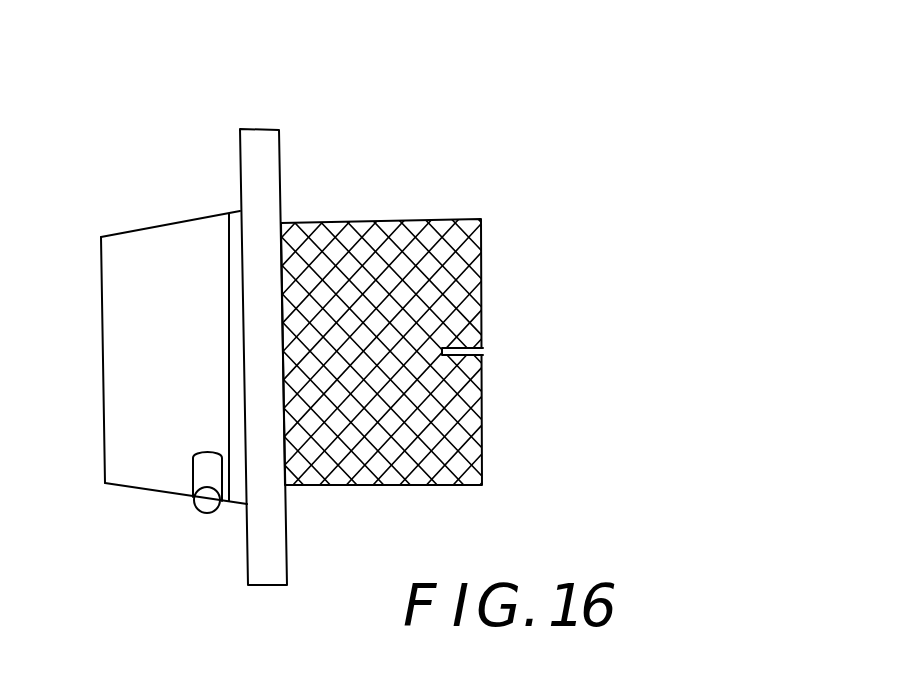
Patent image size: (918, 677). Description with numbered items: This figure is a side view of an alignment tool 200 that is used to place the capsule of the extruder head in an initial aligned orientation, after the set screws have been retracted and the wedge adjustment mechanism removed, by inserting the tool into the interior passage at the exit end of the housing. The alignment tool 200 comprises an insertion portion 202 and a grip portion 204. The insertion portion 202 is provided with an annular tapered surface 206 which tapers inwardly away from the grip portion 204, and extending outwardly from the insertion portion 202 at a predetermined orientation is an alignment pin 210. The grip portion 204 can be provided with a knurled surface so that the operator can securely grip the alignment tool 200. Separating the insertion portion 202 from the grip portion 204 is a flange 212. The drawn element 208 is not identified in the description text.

The alignment tool 200 is at (538, 60).
The insertion portion 202 is at (123, 200).
The grip portion 204 is at (469, 195).
The annular tapered surface 206 is at (118, 473).
The filter mesh 208 is at (433, 478).
The alignment pin 210 is at (197, 483).
The flange 212 is at (267, 163).